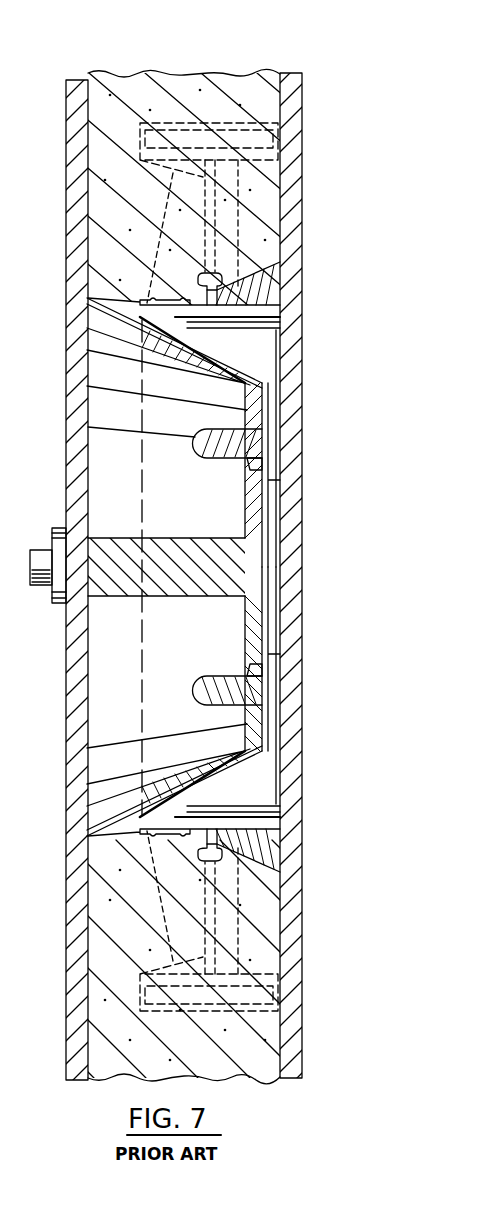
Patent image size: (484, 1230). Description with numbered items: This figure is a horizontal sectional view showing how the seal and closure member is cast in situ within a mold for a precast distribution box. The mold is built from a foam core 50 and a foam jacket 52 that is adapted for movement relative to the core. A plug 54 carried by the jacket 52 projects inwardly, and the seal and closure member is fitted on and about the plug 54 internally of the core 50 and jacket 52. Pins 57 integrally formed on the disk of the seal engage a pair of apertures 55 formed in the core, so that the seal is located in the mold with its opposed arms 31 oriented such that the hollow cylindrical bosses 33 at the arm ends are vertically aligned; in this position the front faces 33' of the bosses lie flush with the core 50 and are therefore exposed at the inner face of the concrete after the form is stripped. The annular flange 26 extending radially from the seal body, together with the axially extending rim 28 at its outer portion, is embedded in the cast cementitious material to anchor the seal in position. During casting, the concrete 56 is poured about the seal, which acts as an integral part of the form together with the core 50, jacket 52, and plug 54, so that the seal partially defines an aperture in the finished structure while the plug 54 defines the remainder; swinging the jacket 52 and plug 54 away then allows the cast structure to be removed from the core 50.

The annular flange 26 is at (173, 756).
The rim 28 is at (221, 273).
The arms 31 is at (225, 228).
The hollow cylindrical bosses 33 is at (244, 533).
The front faces of the bosses 33' is at (253, 553).
The foam core 50 is at (290, 387).
The foam jacket 52 is at (78, 229).
The plug 54 is at (247, 619).
The apertures 55 is at (253, 463).
The concrete 56 is at (257, 211).
The pins 57 is at (209, 429).